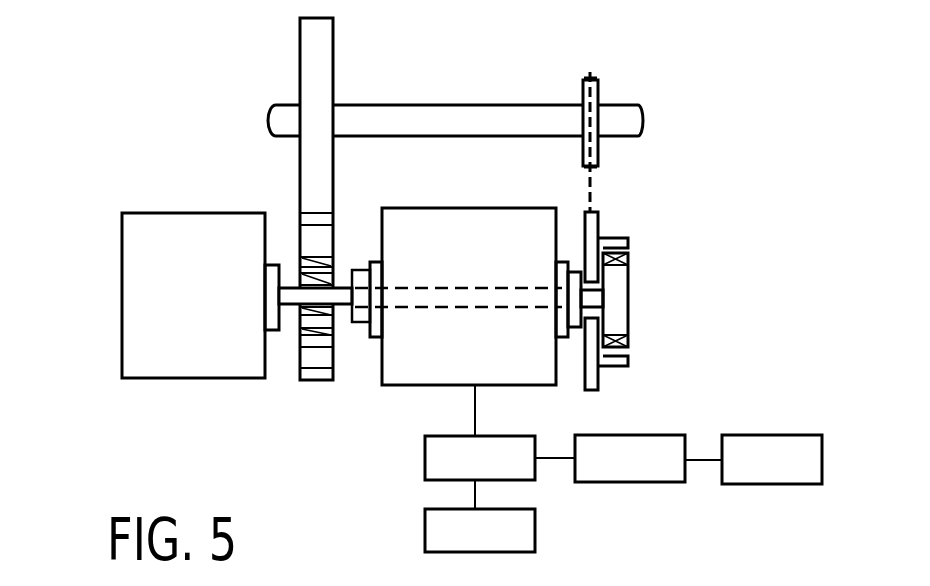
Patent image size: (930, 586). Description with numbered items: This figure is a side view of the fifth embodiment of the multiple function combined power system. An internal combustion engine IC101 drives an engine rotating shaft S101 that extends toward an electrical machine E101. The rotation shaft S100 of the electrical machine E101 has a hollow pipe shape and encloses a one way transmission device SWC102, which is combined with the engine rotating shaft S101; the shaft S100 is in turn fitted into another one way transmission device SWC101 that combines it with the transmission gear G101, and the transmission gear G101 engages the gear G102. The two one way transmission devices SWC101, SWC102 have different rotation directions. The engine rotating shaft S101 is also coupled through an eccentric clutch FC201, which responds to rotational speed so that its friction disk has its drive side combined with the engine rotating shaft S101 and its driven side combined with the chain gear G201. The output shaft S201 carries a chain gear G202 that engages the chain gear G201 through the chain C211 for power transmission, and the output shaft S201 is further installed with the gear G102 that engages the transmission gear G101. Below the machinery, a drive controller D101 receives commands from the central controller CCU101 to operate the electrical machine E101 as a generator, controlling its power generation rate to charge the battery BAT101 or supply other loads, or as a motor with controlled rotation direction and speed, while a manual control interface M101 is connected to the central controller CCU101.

The internal combustion engine IC101 is at (140, 316).
The engine rotating shaft S101 is at (289, 305).
The one way transmission device SWC101 is at (300, 255).
The one way transmission device SWC102 is at (343, 332).
The transmission gear G101 is at (322, 380).
The gear G102 is at (325, 70).
The rotation shaft S100 is at (363, 275).
The electrical machine E101 is at (503, 368).
The output shaft S201 is at (630, 118).
The chain gear G202 is at (600, 82).
The chain C211 is at (598, 183).
The chain gear G201 is at (600, 218).
The eccentric clutch FC201 is at (645, 259).
The drive controller D101 is at (480, 458).
The battery BAT101 is at (480, 516).
The central controller CCU101 is at (610, 458).
The manual control interface M101 is at (753, 459).